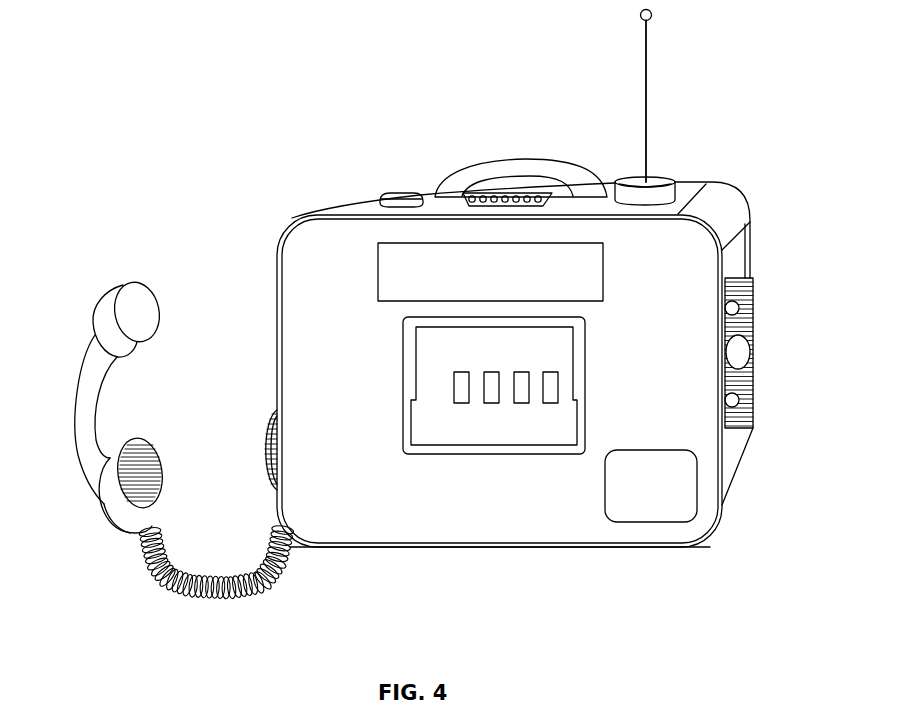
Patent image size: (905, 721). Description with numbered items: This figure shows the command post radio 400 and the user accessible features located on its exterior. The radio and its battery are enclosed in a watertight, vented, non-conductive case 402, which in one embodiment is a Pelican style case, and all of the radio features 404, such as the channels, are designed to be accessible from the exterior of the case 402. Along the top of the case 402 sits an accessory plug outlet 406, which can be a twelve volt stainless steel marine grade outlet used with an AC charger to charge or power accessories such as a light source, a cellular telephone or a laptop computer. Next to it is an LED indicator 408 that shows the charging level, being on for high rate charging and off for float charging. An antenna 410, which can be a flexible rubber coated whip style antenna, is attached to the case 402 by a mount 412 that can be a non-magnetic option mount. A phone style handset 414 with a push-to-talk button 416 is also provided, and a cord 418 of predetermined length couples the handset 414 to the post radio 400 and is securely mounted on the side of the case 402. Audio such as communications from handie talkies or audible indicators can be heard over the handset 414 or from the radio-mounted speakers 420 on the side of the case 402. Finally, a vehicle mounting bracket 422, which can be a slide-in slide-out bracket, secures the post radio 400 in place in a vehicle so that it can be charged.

The post radio 400 is at (250, 86).
The case 402 is at (293, 226).
The radio features 404 is at (755, 330).
The accessory plug outlet 406 is at (395, 194).
The LED indicator 408 is at (492, 195).
The antenna 410 is at (650, 55).
The mount 412 is at (662, 175).
The handset 414 is at (82, 497).
The push-to-talk button 416 is at (138, 282).
The cord 418 is at (148, 568).
The radio-mounted speakers 420 is at (274, 428).
The vehicle mounting bracket 422 is at (472, 546).